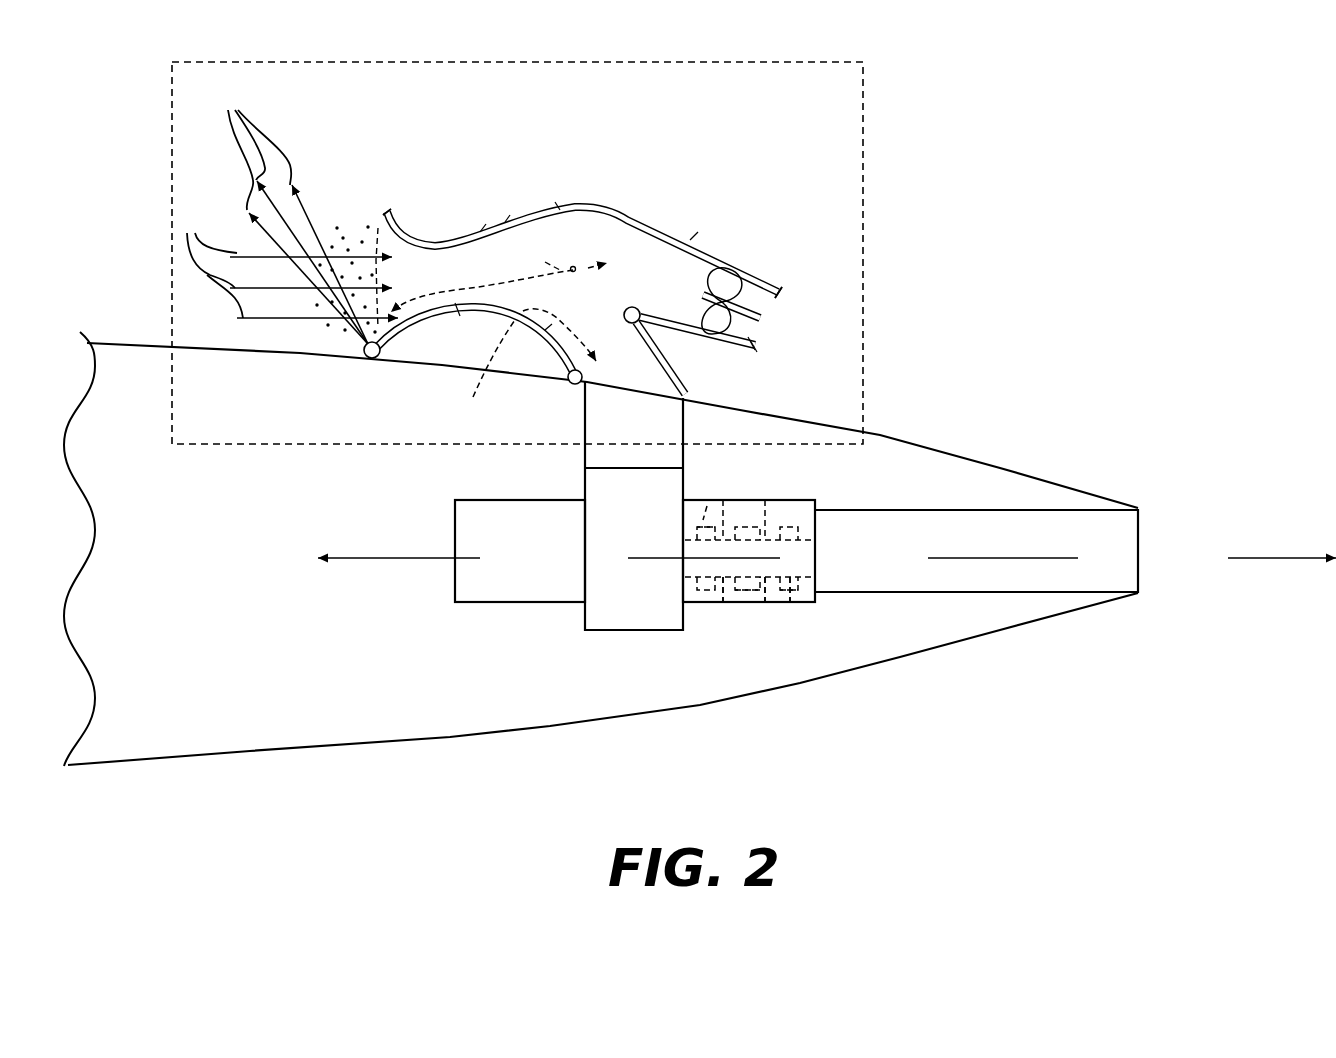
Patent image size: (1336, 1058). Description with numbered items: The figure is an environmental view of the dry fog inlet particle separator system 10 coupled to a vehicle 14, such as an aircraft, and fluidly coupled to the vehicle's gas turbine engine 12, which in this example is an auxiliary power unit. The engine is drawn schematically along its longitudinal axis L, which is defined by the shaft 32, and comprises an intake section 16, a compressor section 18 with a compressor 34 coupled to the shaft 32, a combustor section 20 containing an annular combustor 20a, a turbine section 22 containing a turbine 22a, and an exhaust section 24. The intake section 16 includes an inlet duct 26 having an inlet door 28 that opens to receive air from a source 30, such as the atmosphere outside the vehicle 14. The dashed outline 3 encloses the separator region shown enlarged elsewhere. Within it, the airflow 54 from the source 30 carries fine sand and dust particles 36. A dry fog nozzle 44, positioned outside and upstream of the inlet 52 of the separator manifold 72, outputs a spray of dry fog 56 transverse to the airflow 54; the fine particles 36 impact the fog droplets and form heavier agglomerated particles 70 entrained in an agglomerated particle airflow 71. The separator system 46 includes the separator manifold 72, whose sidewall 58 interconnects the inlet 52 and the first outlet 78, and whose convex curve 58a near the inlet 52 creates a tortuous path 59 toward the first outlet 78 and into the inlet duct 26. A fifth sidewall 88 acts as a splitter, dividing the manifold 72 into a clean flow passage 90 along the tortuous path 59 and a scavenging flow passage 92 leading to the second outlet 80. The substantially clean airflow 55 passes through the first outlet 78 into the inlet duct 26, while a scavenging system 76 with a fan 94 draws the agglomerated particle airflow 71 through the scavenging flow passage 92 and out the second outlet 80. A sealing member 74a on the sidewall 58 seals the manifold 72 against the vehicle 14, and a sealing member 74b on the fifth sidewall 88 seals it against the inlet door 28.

The enlarged detail region 3 is at (865, 105).
The dry fog inlet particle separator system 10 is at (698, 197).
The gas turbine engine 12 is at (757, 462).
The vehicle 14 is at (663, 712).
The intake section 16 is at (582, 437).
The compressor section 18 is at (718, 602).
The combustor section 20 is at (758, 602).
The annular combustor 20a is at (743, 602).
The turbine section 22 is at (802, 602).
The turbine 22a is at (790, 602).
The exhaust section 24 is at (1067, 592).
The inlet duct 26 is at (687, 420).
The inlet door 28 is at (668, 371).
The source 30 is at (115, 208).
The shaft 32 is at (690, 605).
The compressor 34 is at (706, 500).
The fine sand and dust particles 36 is at (340, 213).
The dry fog nozzle 44 is at (370, 358).
The separator system 46 is at (559, 190).
The inlet 52 is at (376, 212).
The airflow 54 is at (291, 260).
The substantially clean airflow 55 is at (493, 350).
The spray of dry fog 56 is at (295, 214).
The sidewall 58 is at (433, 322).
The convex curve 58a is at (490, 318).
The tortuous path 59 is at (507, 246).
The agglomerated particles 70 is at (575, 266).
The agglomerated particle airflow 71 is at (545, 262).
The separator manifold 72 is at (487, 220).
The sealing member 74a is at (570, 383).
The sealing member 74b is at (636, 306).
The scavenging system 76 is at (758, 334).
The first outlet 78 is at (649, 341).
The second outlet 80 is at (788, 289).
The fifth sidewall 88 is at (742, 348).
The clean flow passage 90 is at (570, 355).
The scavenging flow passage 92 is at (620, 247).
The fan 94 is at (735, 278).
The longitudinal axis L is at (1258, 560).